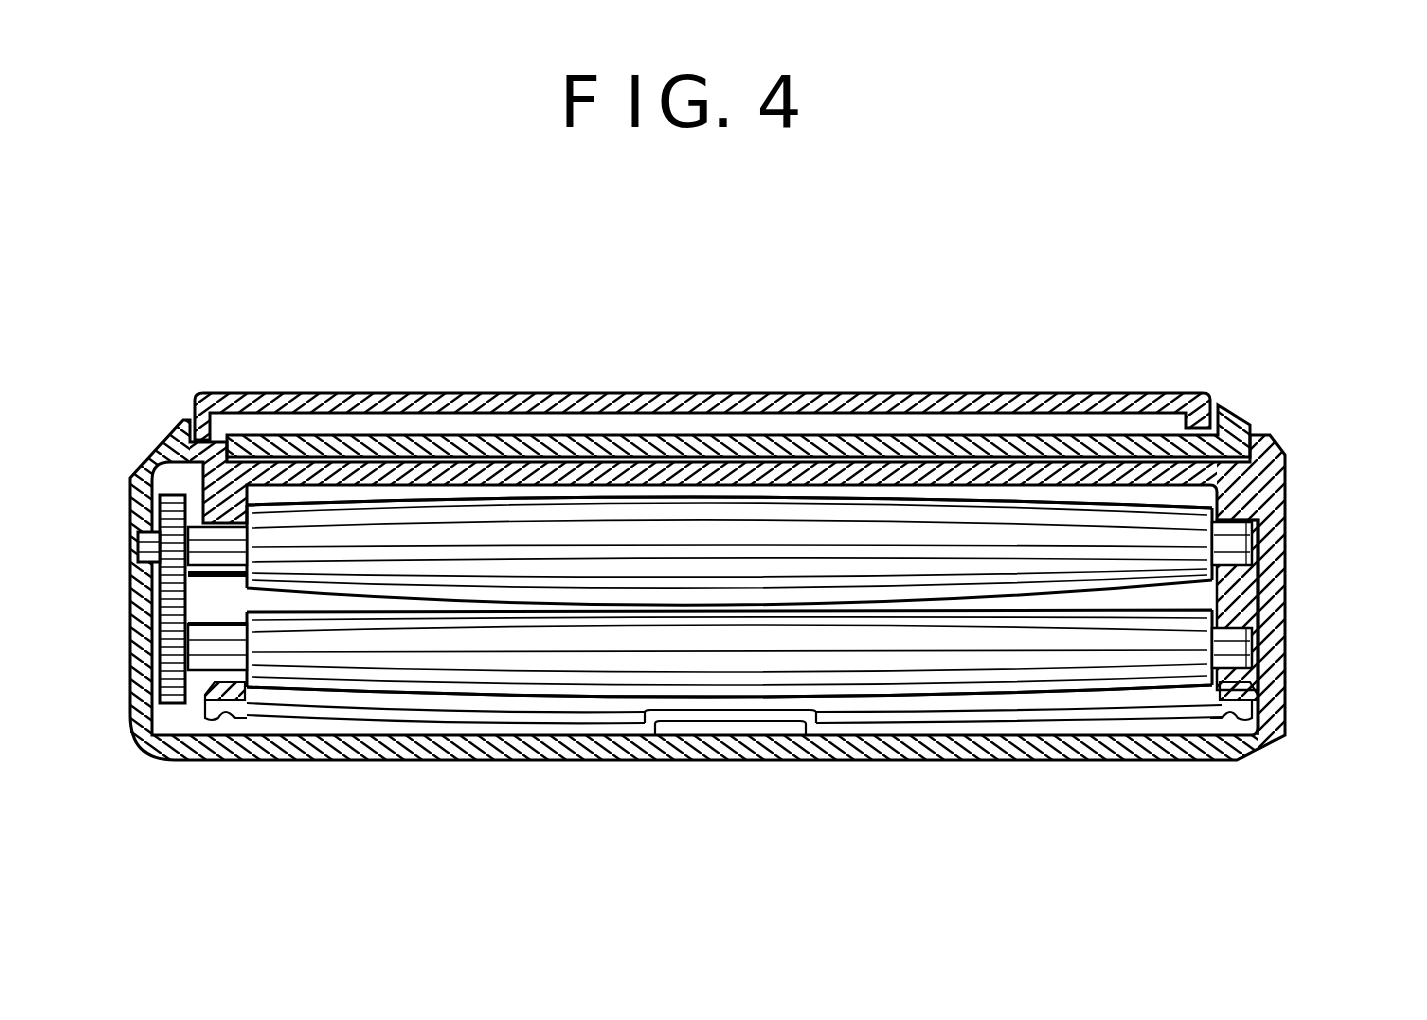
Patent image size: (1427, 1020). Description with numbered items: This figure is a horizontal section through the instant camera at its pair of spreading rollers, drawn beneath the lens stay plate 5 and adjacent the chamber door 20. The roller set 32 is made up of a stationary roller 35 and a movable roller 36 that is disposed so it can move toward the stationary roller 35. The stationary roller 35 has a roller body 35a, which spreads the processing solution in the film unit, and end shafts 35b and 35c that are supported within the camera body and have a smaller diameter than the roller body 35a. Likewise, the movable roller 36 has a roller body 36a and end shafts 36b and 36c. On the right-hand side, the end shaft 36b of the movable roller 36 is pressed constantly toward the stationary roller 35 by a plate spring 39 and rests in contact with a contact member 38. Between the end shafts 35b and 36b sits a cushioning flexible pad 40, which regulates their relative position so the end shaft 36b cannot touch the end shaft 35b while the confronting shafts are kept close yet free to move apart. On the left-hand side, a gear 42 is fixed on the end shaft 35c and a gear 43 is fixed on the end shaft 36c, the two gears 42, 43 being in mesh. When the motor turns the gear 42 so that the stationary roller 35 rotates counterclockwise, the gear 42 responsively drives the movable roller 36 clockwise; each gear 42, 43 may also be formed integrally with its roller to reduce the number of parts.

The lens stay plate 5 is at (945, 403).
The chamber door 20 is at (873, 447).
The roller set 32 is at (1148, 325).
The stationary roller 35 is at (807, 464).
The roller body 35a is at (779, 500).
The end shaft 35b is at (1233, 542).
The end shaft 35c is at (222, 545).
The movable roller 36 is at (807, 590).
The roller body 36a is at (772, 683).
The end shaft 36b is at (1235, 655).
The end shaft 36c is at (193, 683).
The contact member 38 is at (1287, 690).
The plate spring 39 is at (685, 718).
The cushioning flexible pad 40 is at (1233, 598).
The gear 42 is at (148, 507).
The gear 43 is at (150, 690).